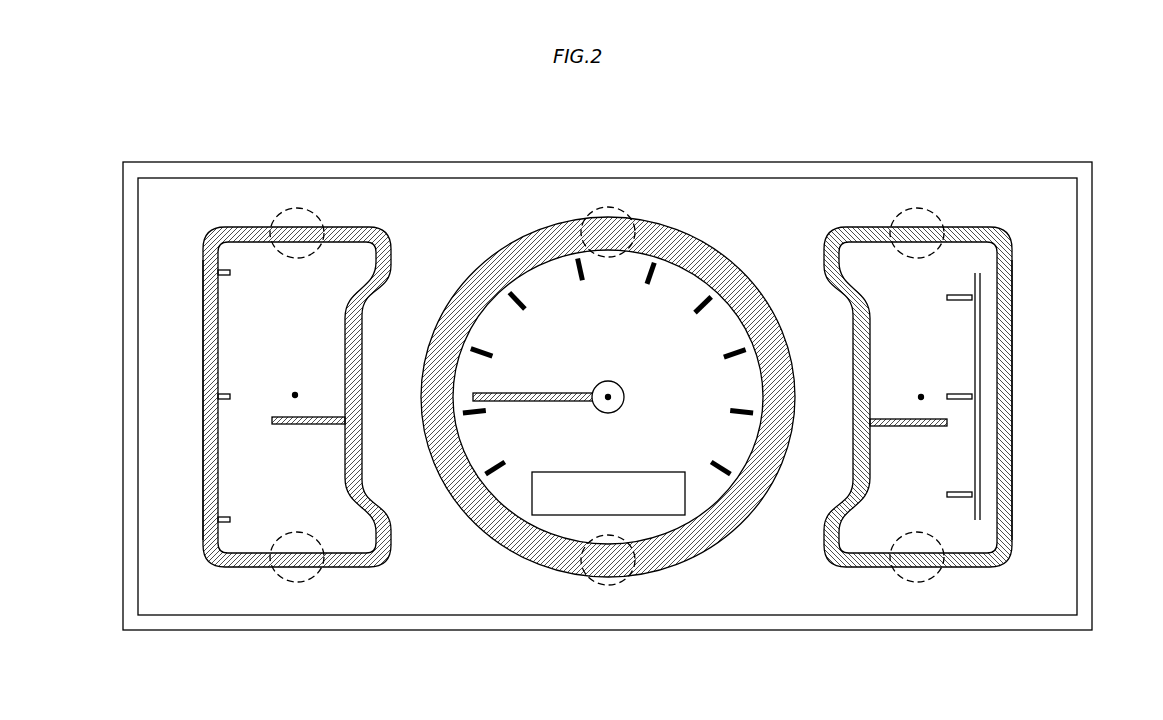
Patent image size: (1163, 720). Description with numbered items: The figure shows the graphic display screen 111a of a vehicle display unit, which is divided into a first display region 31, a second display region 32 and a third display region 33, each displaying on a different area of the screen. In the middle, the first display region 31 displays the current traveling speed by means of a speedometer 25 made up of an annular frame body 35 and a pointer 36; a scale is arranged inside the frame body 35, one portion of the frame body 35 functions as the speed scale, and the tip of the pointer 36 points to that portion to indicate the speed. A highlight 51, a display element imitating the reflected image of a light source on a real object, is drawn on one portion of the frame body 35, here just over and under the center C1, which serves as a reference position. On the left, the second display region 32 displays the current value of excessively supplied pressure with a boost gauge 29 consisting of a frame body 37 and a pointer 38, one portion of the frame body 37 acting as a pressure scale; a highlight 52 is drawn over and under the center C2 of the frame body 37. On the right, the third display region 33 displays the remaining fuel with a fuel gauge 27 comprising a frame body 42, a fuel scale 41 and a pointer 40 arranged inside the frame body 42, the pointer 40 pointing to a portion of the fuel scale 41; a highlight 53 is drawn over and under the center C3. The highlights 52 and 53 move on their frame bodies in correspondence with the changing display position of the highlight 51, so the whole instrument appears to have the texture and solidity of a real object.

The graphic display screen 111a is at (406, 190).
The boost gauge 29 is at (250, 226).
The fuel gauge 27 is at (863, 226).
The second display region 32 is at (230, 393).
The third display region 33 is at (982, 393).
The first display region 31 is at (608, 393).
The frame body 35 is at (702, 262).
The speedometer 25 is at (582, 245).
The pointer 36 is at (576, 392).
The frame body 37 is at (205, 284).
The pointer 38 is at (300, 428).
The frame body 42 is at (1013, 292).
The fuel scale 41 is at (982, 336).
The pointer 40 is at (913, 427).
The highlight 51 is at (598, 206).
The highlight 52 is at (296, 206).
The highlight 53 is at (913, 206).
The center C1 is at (590, 400).
The center C2 is at (295, 394).
The center C3 is at (922, 397).